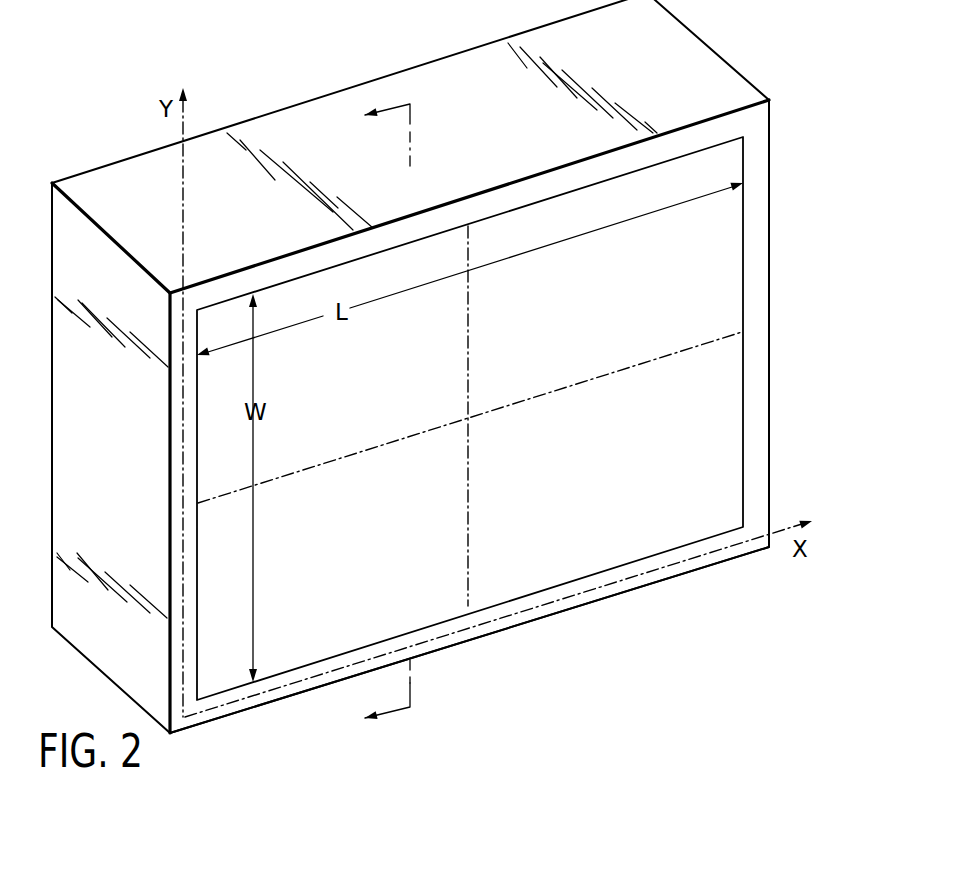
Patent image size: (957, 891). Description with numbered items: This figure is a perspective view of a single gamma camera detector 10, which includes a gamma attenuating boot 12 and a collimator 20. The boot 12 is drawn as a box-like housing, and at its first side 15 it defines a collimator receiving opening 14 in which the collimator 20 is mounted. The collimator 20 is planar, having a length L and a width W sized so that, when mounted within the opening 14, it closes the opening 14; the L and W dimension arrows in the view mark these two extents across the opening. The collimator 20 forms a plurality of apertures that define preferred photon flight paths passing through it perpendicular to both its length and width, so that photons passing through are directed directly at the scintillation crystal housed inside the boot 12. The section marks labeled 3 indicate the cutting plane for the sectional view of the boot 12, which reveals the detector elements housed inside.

The gamma camera detector 10 is at (808, 219).
The gamma attenuating boot 12 is at (710, 93).
The collimator receiving opening 14 is at (744, 399).
The first side 15 is at (677, 570).
The collimator 20 is at (712, 470).
The section line 3- 3 is at (379, 420).